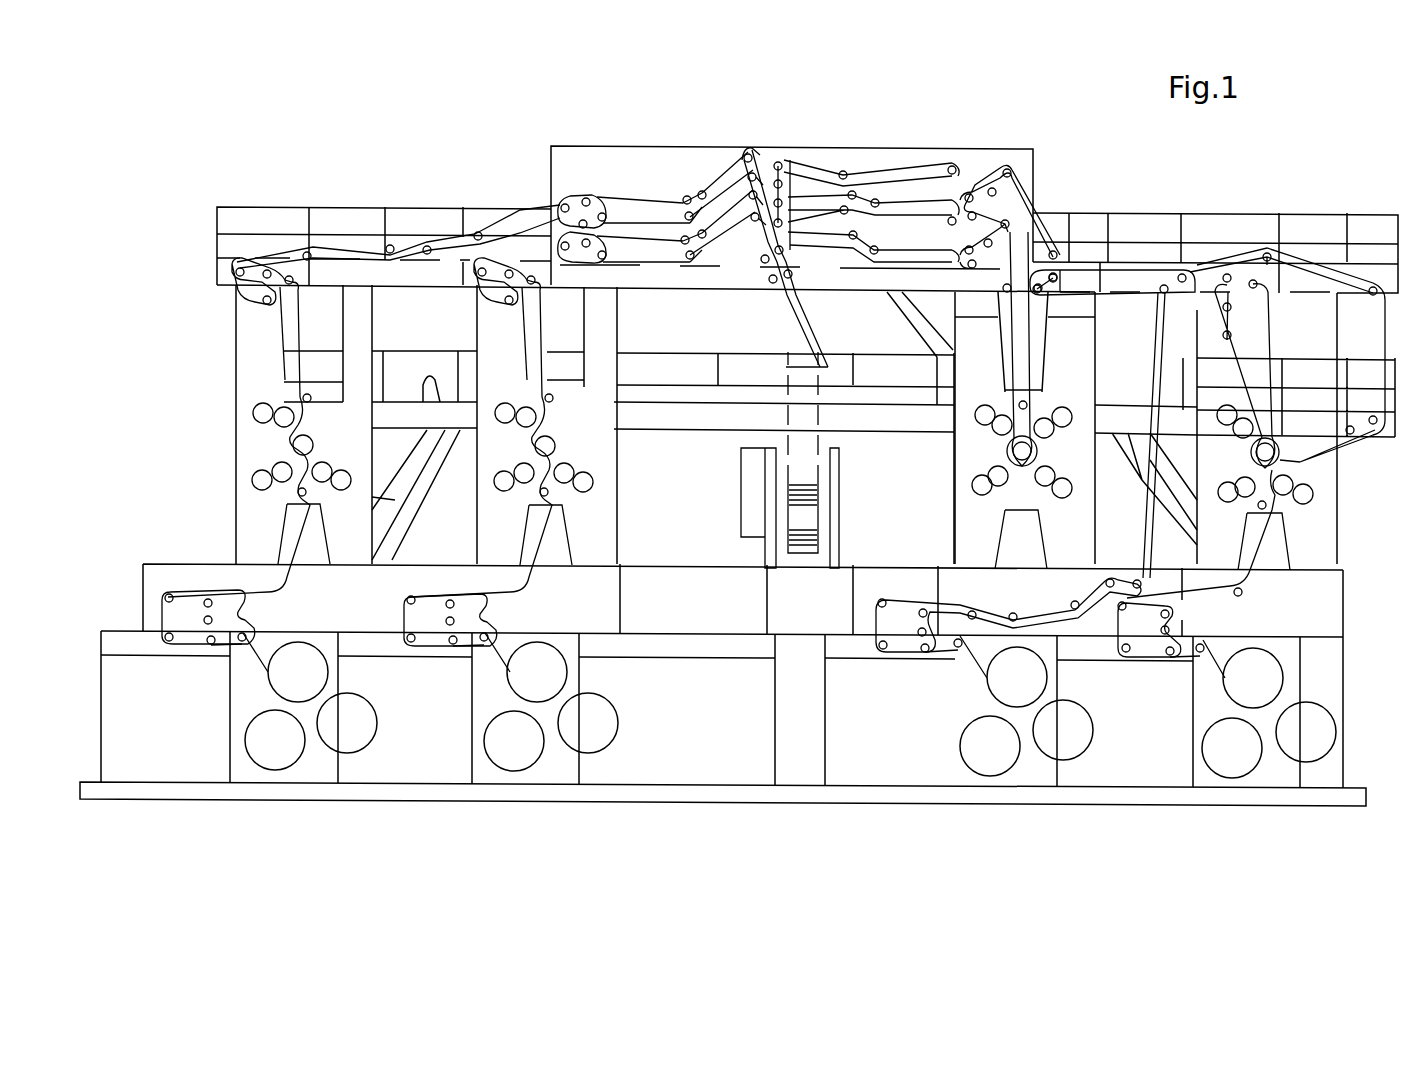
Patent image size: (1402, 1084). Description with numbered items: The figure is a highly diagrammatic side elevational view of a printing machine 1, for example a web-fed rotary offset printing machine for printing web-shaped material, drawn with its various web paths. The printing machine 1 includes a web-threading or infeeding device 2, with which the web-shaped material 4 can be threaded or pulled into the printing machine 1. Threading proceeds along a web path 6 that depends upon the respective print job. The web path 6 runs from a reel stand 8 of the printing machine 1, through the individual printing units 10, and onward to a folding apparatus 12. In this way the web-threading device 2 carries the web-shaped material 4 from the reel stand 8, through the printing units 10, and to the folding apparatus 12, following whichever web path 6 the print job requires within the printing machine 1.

The printing machine 1 is at (790, 137).
The web-threading device 2 is at (281, 389).
The web-shaped material 4 is at (237, 588).
The web path 6 is at (579, 192).
The reel stand 8 is at (312, 738).
The printing units 10 is at (1045, 452).
The folding apparatus 12 is at (828, 512).